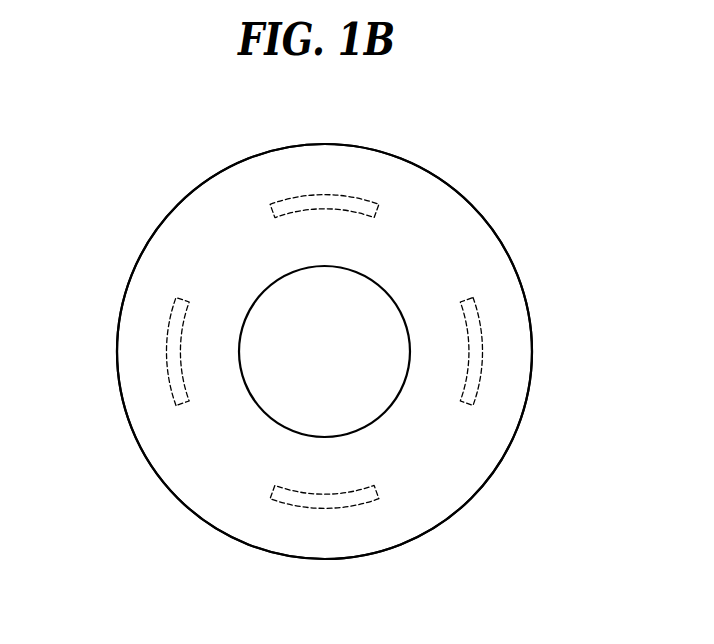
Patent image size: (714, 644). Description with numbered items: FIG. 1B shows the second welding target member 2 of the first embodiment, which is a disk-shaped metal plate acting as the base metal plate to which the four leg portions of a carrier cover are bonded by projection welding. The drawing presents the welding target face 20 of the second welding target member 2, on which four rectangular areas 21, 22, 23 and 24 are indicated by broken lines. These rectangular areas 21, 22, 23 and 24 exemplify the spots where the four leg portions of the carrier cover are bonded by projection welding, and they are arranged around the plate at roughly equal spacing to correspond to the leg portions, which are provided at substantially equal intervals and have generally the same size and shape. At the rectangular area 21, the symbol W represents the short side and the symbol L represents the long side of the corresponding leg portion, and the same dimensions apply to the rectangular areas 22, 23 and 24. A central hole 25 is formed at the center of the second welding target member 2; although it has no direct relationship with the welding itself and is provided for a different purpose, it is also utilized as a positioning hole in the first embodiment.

The second welding target member 2 is at (524, 204).
The welding target face 20 is at (182, 462).
The rectangular area 21 is at (320, 508).
The rectangular area 22 is at (483, 352).
The rectangular area 23 is at (327, 195).
The rectangular area 24 is at (166, 352).
The central hole 25 is at (353, 393).
The short side W is at (274, 492).
The long side L is at (282, 503).